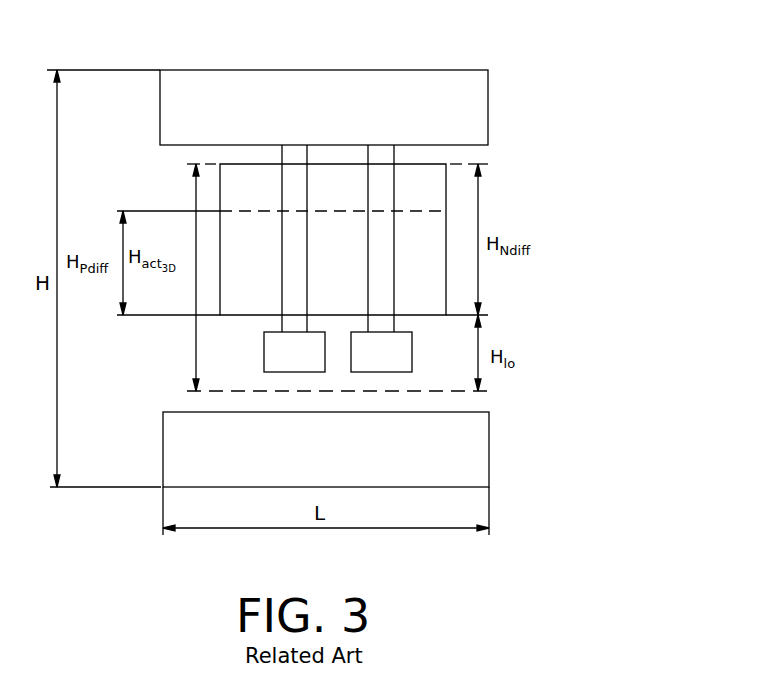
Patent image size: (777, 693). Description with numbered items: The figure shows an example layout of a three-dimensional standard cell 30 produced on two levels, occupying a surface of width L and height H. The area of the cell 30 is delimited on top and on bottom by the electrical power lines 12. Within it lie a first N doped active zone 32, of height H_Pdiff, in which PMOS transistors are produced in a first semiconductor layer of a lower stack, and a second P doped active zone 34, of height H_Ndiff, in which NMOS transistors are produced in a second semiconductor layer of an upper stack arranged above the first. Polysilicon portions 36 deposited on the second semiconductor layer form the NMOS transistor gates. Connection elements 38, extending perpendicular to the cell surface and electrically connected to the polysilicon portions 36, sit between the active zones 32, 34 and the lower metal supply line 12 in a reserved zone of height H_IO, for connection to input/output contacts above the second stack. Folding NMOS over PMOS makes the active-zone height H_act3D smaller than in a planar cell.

The 3D standard cell 30 is at (380, 255).
The electrical power line 12 is at (470, 113).
The first N doped active zone 32 is at (437, 287).
The second P doped active zone 34 is at (437, 194).
The polysilicon portion 36 is at (295, 152).
The connection element 38 is at (278, 352).